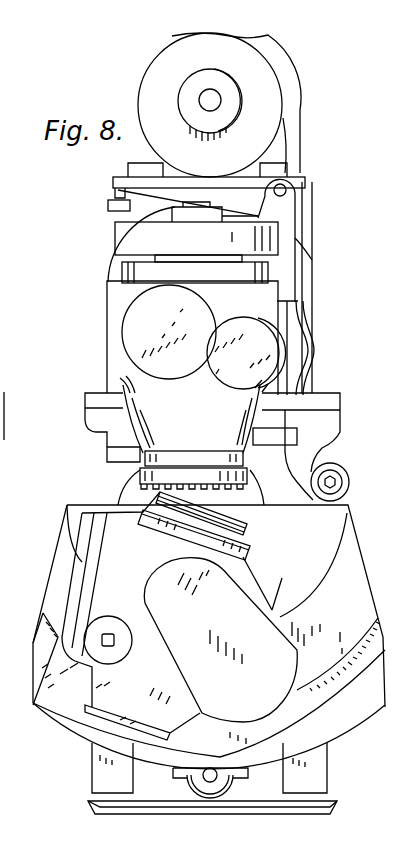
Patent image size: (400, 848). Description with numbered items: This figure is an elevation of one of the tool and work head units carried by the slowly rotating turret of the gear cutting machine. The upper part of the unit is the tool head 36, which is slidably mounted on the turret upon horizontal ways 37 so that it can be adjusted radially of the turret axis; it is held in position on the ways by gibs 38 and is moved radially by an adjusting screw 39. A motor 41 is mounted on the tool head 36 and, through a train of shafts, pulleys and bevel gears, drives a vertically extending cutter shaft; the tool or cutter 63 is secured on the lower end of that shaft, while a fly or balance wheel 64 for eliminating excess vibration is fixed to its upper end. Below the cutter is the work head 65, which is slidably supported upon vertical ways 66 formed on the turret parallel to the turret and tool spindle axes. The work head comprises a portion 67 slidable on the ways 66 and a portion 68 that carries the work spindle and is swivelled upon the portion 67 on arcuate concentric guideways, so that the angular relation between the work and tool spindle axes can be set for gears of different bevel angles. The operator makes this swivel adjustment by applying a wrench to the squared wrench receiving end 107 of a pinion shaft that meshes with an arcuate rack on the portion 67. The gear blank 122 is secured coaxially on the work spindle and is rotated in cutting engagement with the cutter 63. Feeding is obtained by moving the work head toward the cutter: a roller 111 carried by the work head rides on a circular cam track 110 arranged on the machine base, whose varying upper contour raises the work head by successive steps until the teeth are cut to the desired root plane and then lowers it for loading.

The motor 41 is at (262, 75).
The fly or balance wheel 64 is at (137, 233).
The tool head 36 is at (112, 362).
The horizontal ways 37 is at (285, 438).
The gibs 38 is at (112, 455).
The adjusting screw 39 is at (335, 477).
The tool or cutter 63 is at (245, 478).
The gear blank 122 is at (253, 522).
The work head 65 is at (243, 566).
The portion of work head slidable on ways 67 is at (353, 555).
The swivelled portion of work head 68 is at (33, 703).
The squared wrench receiving end 107 is at (108, 648).
The vertical ways 66 is at (92, 768).
The roller 111 is at (235, 790).
The circular cam track 110 is at (200, 807).